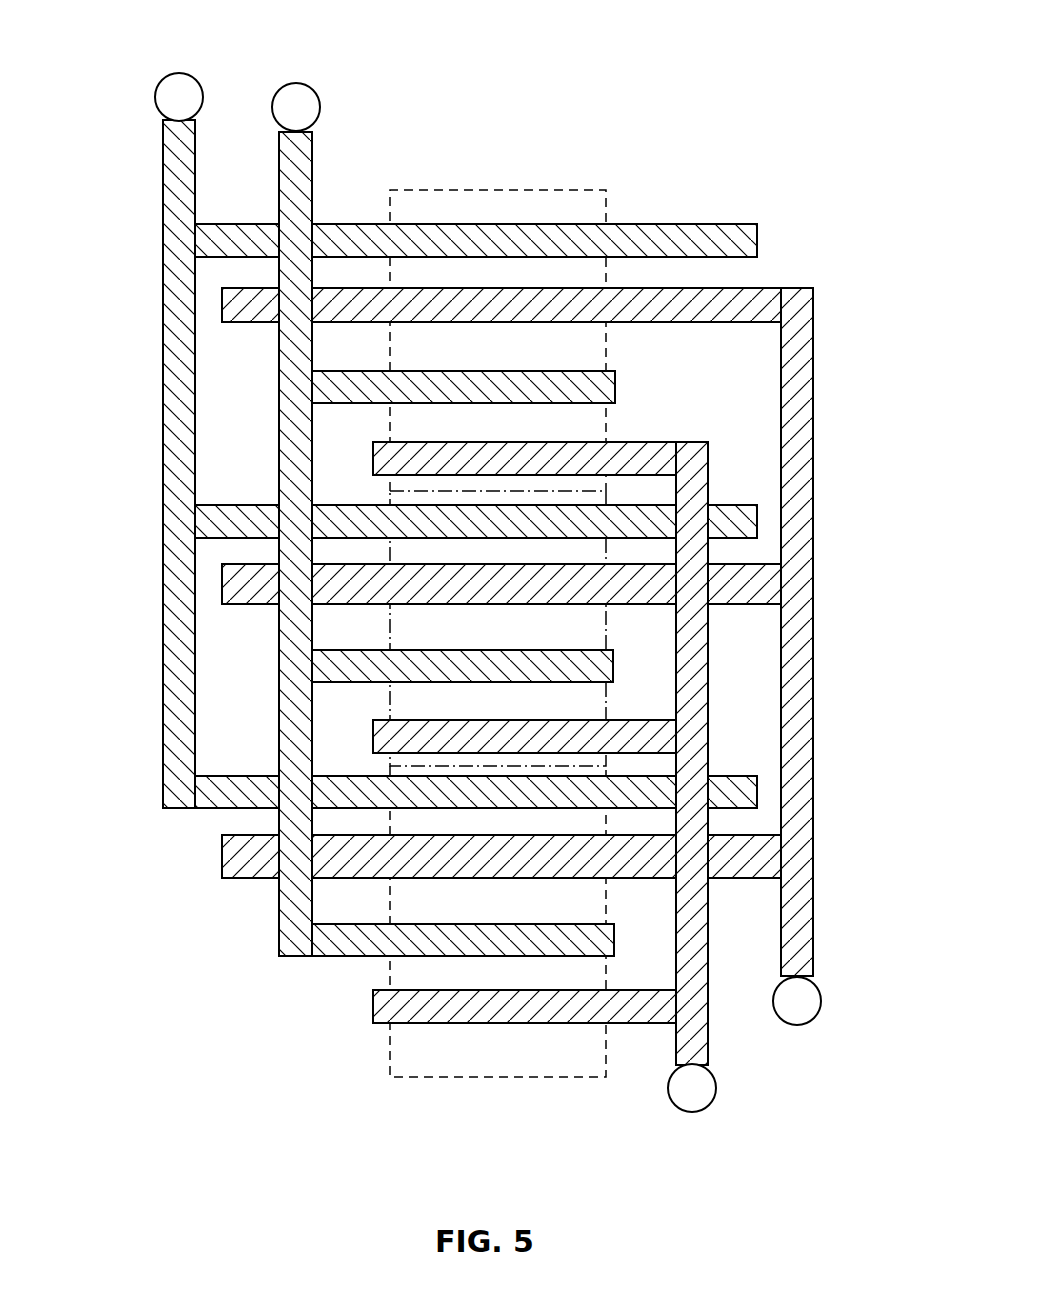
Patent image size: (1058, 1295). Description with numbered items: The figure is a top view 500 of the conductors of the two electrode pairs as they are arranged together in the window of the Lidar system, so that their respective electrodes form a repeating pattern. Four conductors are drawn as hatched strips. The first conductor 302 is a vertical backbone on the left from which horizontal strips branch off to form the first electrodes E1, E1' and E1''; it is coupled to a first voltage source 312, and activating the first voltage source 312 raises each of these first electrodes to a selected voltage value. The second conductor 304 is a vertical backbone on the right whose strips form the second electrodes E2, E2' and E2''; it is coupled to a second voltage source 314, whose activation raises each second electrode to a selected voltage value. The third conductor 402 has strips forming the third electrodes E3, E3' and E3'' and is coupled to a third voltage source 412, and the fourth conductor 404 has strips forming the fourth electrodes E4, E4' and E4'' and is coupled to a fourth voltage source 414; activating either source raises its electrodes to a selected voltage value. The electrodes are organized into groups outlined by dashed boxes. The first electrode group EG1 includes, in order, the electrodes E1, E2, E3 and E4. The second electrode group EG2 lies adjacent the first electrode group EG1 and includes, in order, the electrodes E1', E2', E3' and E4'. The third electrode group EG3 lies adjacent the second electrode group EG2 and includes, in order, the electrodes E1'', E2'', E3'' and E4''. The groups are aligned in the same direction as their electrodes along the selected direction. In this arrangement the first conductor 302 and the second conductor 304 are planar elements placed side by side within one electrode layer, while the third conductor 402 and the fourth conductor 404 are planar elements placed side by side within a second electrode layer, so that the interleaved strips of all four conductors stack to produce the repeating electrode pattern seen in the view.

The top view 500 is at (838, 33).
The first conductor 302 is at (163, 465).
The second conductor 304 is at (802, 909).
The first voltage source 312 is at (158, 77).
The second voltage source 314 is at (813, 1022).
The third conductor 402 is at (290, 410).
The fourth conductor 404 is at (702, 1020).
The third voltage source 412 is at (312, 88).
The fourth voltage source 414 is at (708, 1108).
The first electrode E1 is at (476, 223).
The second electrode E2 is at (522, 252).
The third electrode E3 is at (500, 375).
The fourth electrode E4 is at (533, 443).
The first electrode E1' is at (540, 498).
The second electrode E2' is at (555, 571).
The third electrode E3' is at (462, 649).
The fourth electrode E4' is at (524, 720).
The first electrode E1'' is at (542, 765).
The second electrode E2'' is at (557, 838).
The third electrode E3'' is at (463, 923).
The fourth electrode E4'' is at (481, 1016).
The first electrode group EG1 is at (503, 190).
The second electrode group EG2 is at (388, 618).
The third electrode group EG3 is at (498, 1078).